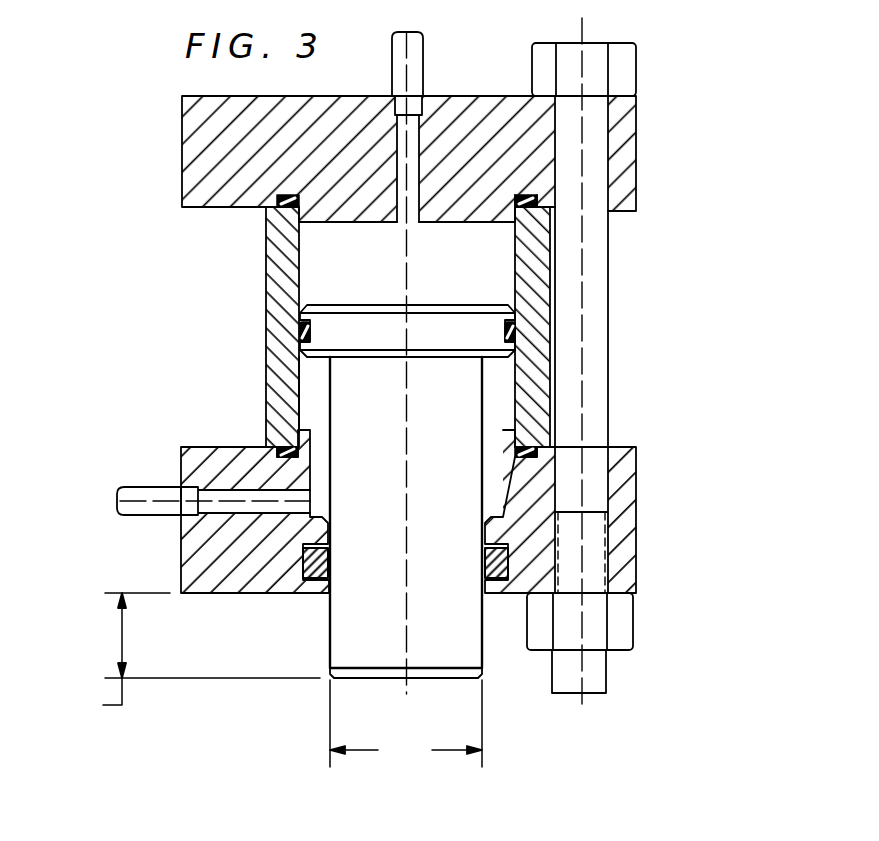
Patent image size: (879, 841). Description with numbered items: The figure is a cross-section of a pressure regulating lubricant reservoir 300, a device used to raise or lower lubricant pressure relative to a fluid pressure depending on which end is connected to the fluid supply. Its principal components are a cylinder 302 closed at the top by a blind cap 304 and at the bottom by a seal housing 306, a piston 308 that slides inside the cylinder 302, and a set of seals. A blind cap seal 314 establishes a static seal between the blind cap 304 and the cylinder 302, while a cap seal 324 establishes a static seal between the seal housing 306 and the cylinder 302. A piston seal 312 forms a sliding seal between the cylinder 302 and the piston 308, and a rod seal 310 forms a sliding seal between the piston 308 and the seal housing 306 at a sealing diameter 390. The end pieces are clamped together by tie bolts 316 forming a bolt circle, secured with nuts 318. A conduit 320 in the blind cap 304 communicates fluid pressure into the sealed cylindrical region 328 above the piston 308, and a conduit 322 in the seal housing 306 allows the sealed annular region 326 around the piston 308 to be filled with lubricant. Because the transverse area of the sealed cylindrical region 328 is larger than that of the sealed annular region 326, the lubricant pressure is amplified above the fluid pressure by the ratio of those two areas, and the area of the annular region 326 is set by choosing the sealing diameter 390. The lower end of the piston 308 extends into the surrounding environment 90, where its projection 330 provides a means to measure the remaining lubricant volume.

The pressure regulating lubricant reservoir 300 is at (148, 169).
The cylinder 302 is at (267, 287).
The blind cap 304 is at (637, 165).
The seal housing 306 is at (637, 560).
The piston 308 is at (483, 396).
The rod seal 310 is at (285, 593).
The piston seal 312 is at (515, 335).
The blind cap seal 314 is at (283, 210).
The tie bolts 316 is at (637, 70).
The nuts 318 is at (634, 627).
The conduit 320 is at (423, 45).
The conduit 322 is at (132, 487).
The cap seal 324 is at (283, 446).
The sealed annular region 326 is at (316, 393).
The sealed cylindrical region 328 is at (473, 277).
The projection 330 is at (190, 655).
The sealing diameter 390 is at (406, 723).
The environment 90 is at (443, 722).